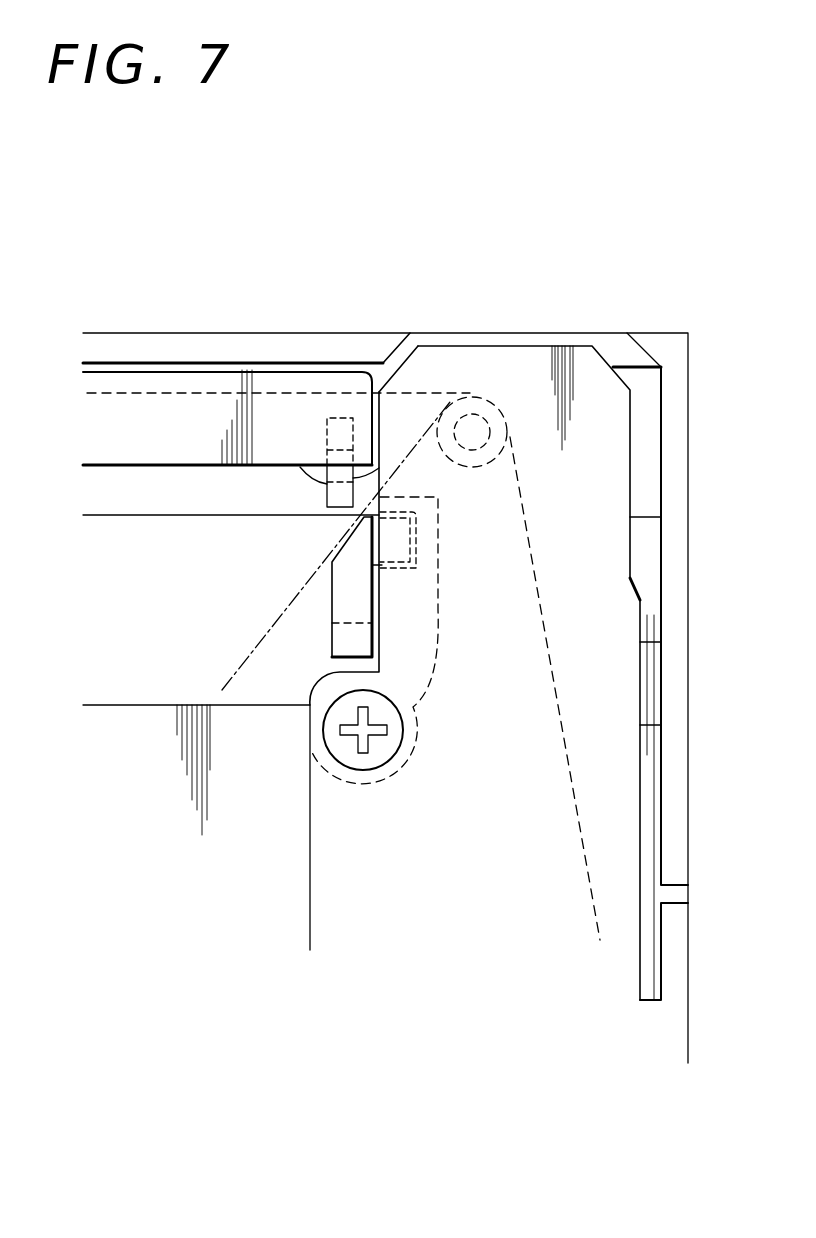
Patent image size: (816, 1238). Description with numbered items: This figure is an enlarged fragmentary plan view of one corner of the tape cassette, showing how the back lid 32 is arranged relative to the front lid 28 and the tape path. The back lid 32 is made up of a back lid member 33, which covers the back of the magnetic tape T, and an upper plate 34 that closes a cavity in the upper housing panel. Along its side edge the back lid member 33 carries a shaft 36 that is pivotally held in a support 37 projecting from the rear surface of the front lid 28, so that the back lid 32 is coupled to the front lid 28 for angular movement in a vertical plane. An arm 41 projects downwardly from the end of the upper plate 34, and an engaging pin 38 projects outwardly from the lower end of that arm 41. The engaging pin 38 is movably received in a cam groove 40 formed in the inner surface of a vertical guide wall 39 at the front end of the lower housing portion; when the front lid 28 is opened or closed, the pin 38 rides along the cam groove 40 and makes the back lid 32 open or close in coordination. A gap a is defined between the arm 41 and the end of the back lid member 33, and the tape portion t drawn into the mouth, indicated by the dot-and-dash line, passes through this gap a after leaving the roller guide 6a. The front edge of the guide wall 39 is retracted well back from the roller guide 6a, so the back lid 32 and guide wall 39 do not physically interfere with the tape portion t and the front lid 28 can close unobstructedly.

The front lid 28 is at (562, 333).
The back lid 32 is at (117, 363).
The back lid member 33 is at (210, 420).
The upper plate 34 is at (150, 530).
The shaft 36 is at (381, 492).
The support 37 is at (330, 493).
The engaging pin 38 is at (416, 538).
The vertical guide wall 39 is at (440, 513).
The cam groove 40 is at (396, 562).
The arm 41 is at (360, 595).
The roller guide 6a is at (473, 397).
The magnetic tape T is at (313, 393).
The gap a is at (343, 521).
The tape portion t is at (270, 625).